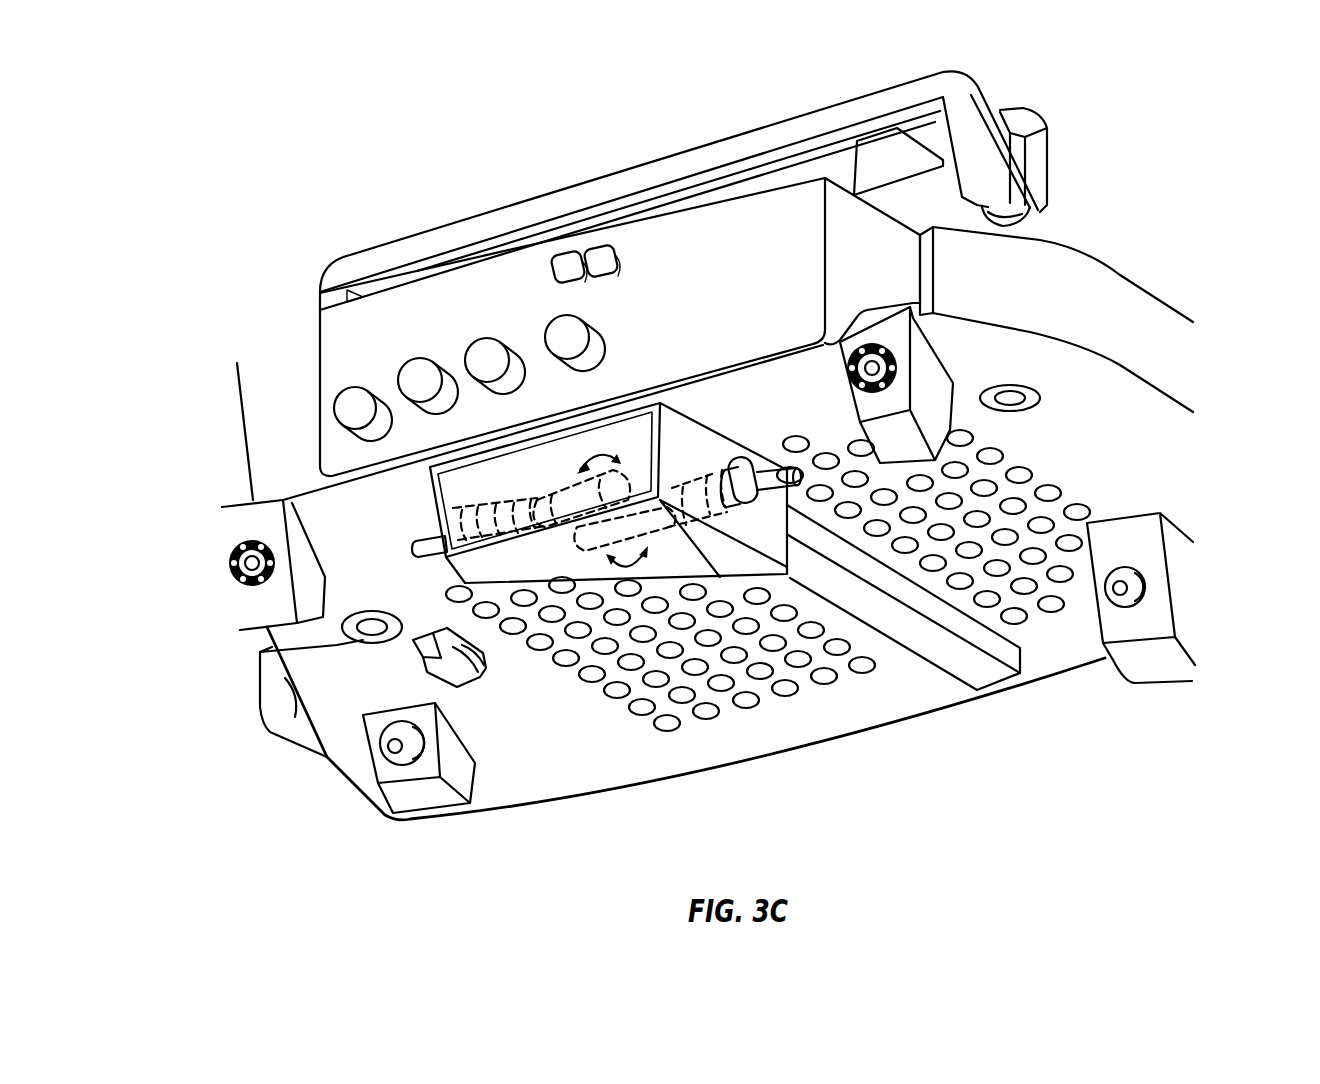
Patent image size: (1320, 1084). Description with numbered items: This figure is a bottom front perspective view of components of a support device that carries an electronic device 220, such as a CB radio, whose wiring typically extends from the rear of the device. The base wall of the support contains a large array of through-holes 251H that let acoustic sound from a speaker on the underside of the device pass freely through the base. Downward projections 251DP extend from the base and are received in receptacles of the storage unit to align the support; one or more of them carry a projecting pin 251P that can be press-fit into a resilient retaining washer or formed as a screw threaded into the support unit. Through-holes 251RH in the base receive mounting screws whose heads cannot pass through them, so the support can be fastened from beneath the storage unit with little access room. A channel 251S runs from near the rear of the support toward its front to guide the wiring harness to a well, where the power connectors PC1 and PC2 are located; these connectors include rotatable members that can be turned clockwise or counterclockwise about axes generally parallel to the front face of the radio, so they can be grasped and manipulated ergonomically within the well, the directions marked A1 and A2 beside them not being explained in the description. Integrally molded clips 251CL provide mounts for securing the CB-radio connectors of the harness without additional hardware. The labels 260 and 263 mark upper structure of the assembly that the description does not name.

The electronic device 220 is at (740, 288).
The frame / carrier bar 260 is at (897, 103).
The recess in carrier bar 263 is at (873, 162).
The downward projections 251DP is at (263, 605).
The through-holes 251RH is at (260, 651).
The clips 251CL is at (453, 672).
The projecting pin 251P is at (395, 746).
The channel 251S is at (963, 658).
The through-holes 251H is at (750, 706).
The power connector PC1 is at (563, 487).
The power connector PC2 is at (580, 520).
The rotation direction arrow 1 A1 is at (606, 450).
The rotation direction arrow 2 A2 is at (641, 563).